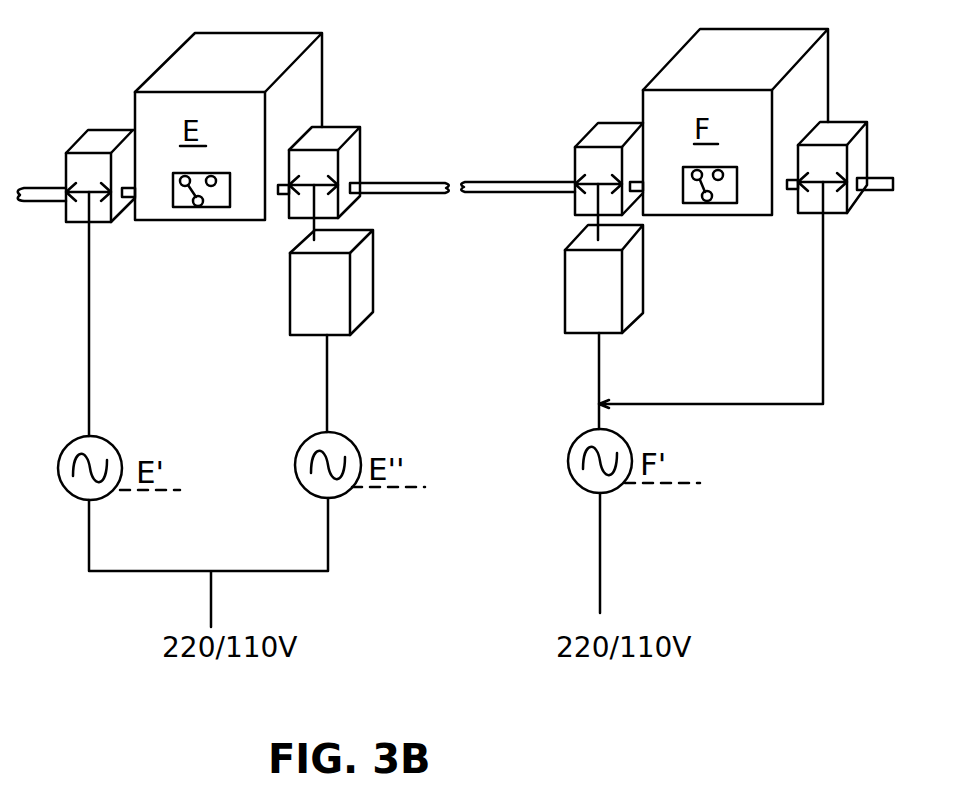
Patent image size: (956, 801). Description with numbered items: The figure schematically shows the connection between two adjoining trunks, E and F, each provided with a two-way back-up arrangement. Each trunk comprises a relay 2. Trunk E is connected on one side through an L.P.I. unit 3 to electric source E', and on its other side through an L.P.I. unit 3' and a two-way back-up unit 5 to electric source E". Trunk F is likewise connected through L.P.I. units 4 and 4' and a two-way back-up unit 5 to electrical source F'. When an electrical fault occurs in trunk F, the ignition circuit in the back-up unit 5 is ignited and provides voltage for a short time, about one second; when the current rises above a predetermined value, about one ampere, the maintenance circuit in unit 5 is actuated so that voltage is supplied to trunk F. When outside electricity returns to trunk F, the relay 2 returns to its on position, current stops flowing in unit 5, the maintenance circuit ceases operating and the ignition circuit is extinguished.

The relay 2 is at (211, 208).
The L.P.I. unit 3 is at (76, 283).
The L.P.I. unit 3' is at (353, 198).
The L.P.I. unit 4 is at (552, 196).
The L.P.I. unit 4' is at (827, 263).
The two-way back-up unit 5 is at (290, 288).